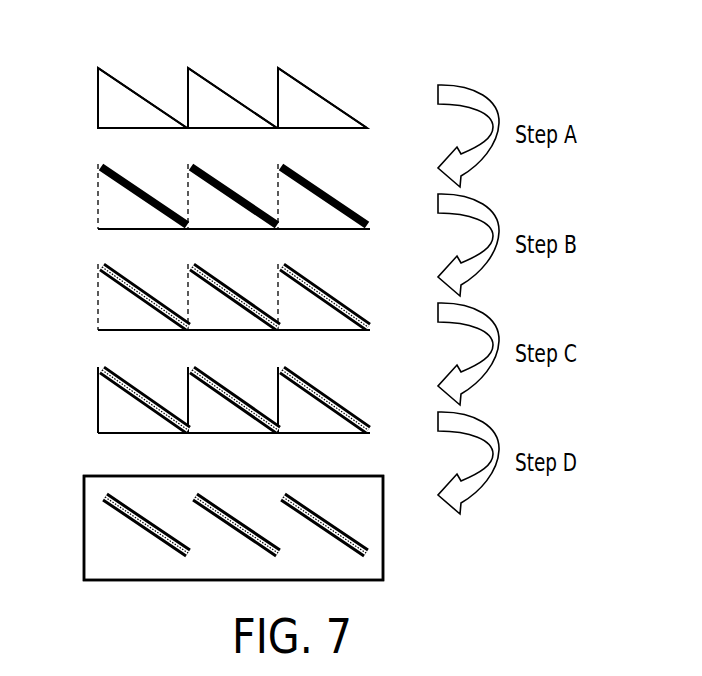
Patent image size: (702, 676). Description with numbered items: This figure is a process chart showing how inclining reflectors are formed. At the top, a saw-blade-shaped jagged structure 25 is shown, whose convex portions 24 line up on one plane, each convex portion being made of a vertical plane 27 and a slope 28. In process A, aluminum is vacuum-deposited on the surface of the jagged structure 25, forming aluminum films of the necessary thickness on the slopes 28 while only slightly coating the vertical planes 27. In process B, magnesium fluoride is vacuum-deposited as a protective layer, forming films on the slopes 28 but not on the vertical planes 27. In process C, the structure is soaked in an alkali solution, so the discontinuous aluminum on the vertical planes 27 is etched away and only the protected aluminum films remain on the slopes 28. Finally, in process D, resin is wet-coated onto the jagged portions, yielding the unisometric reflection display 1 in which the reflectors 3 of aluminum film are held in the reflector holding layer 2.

The unisometric reflection display 1 is at (61, 527).
The reflector holding layer 2 is at (378, 533).
The reflectors 3 is at (133, 517).
The convex portions 24 is at (135, 118).
The jagged structure 25 is at (374, 61).
The vertical plane 27 is at (98, 100).
The slope 28 is at (133, 92).